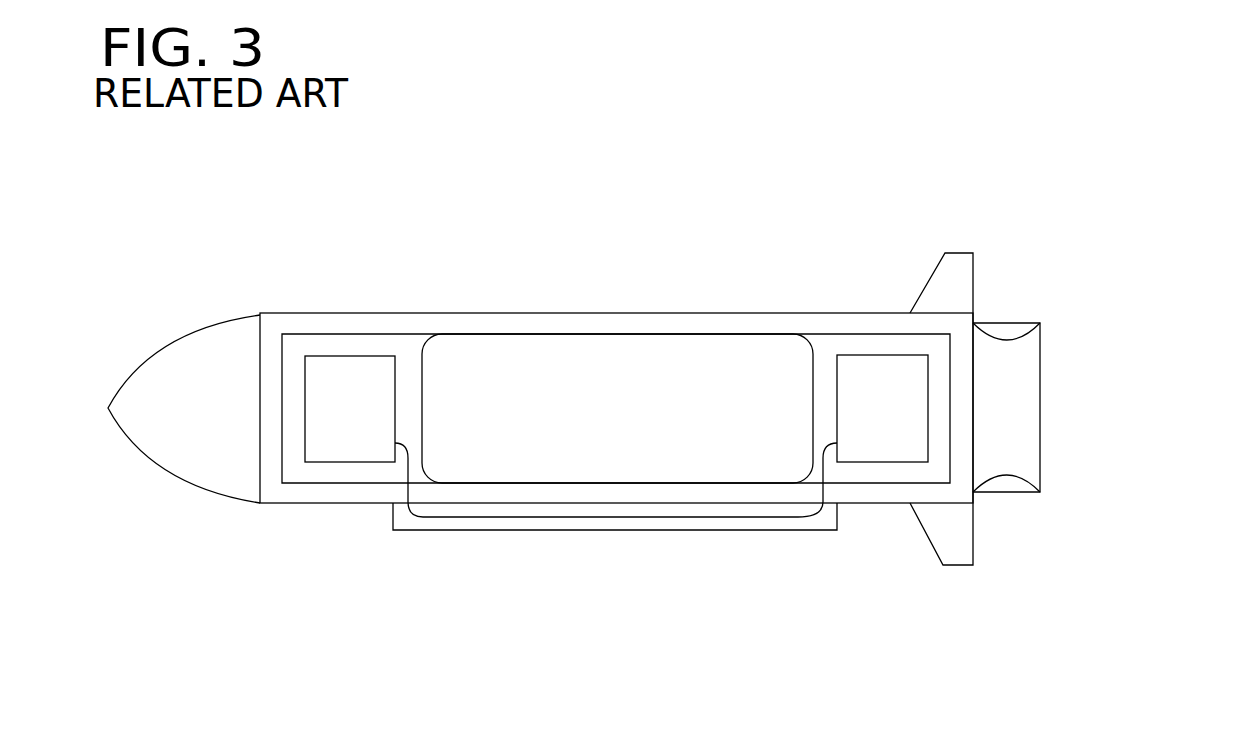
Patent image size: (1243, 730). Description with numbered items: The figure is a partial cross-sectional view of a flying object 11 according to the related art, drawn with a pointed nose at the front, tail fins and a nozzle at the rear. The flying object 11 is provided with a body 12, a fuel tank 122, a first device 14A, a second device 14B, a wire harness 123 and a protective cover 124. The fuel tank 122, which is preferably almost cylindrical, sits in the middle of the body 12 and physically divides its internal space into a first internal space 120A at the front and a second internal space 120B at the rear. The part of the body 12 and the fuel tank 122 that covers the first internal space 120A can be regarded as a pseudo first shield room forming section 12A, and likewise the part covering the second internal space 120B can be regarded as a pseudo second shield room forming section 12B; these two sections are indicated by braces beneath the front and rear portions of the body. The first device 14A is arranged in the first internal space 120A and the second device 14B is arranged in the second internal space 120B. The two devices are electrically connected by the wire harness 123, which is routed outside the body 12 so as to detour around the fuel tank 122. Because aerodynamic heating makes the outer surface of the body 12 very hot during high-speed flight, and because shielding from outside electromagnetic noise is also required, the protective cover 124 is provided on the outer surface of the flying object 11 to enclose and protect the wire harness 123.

The flying object 11 is at (759, 207).
The body 12 is at (610, 321).
The first internal space 120A is at (297, 353).
The second internal space 120B is at (937, 351).
The first device 14A is at (348, 363).
The second device 14B is at (860, 365).
The fuel tank 122 is at (617, 408).
The wire harness 123 is at (613, 519).
The protective cover 124 is at (403, 531).
The first shield room forming section 12A is at (422, 614).
The second shield room forming section 12B is at (973, 614).